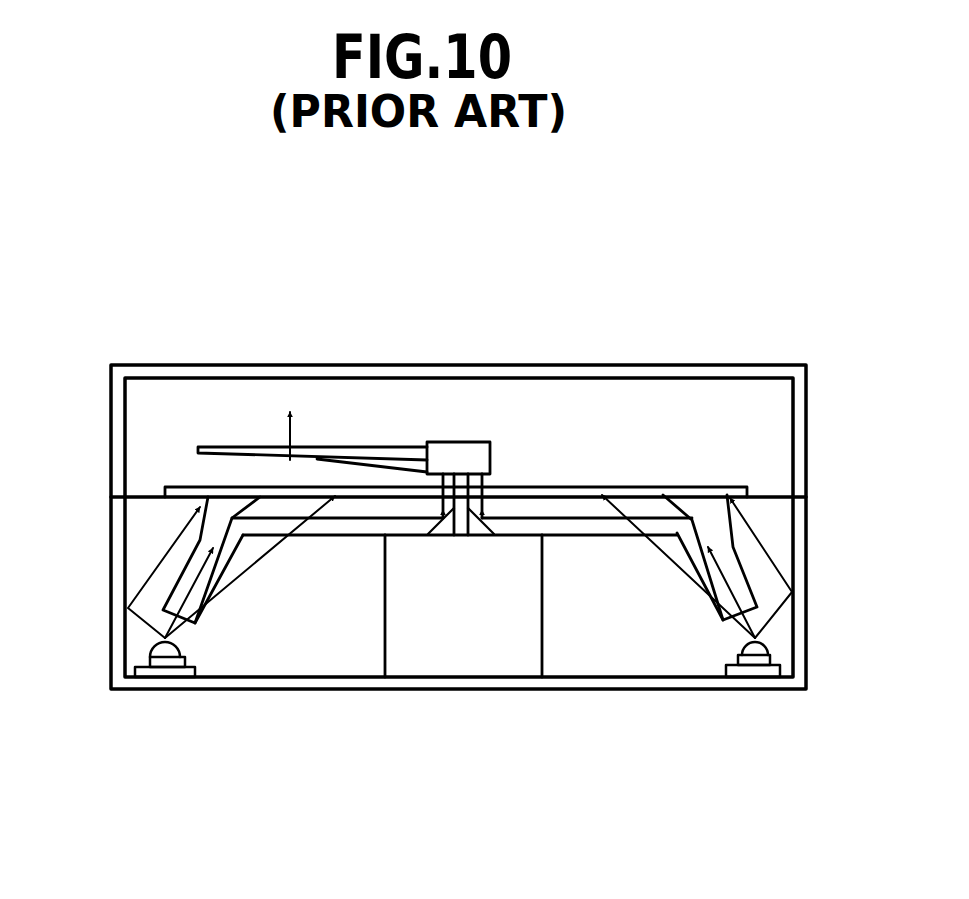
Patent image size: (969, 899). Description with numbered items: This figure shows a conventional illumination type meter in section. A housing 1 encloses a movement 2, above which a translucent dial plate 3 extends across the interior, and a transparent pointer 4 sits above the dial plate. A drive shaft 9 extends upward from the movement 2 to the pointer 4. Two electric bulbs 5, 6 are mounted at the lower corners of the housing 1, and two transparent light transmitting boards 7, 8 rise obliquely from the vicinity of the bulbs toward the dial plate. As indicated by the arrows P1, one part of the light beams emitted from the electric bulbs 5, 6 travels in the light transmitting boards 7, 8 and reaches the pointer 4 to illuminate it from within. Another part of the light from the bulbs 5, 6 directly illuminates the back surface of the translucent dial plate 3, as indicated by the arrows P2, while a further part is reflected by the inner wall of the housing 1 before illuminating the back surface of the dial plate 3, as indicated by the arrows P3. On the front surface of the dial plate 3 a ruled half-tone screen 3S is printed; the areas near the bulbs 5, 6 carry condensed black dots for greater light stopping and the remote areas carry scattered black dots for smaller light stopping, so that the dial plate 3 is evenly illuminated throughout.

The housing 1 is at (108, 423).
The movement 2 is at (493, 657).
The translucent dial plate 3 is at (563, 487).
The ruled half-tone screen 3S is at (642, 487).
The transparent pointer 4 is at (345, 447).
The electric bulb 5 is at (162, 650).
The electric bulb 6 is at (758, 642).
The transparent light transmitting board 7 is at (182, 572).
The transparent light transmitting board 8 is at (738, 565).
The drive shaft 9 is at (461, 488).
The light beam arrow P1 is at (183, 598).
The light beam arrow P2 is at (245, 572).
The light beam arrow P3 is at (172, 543).